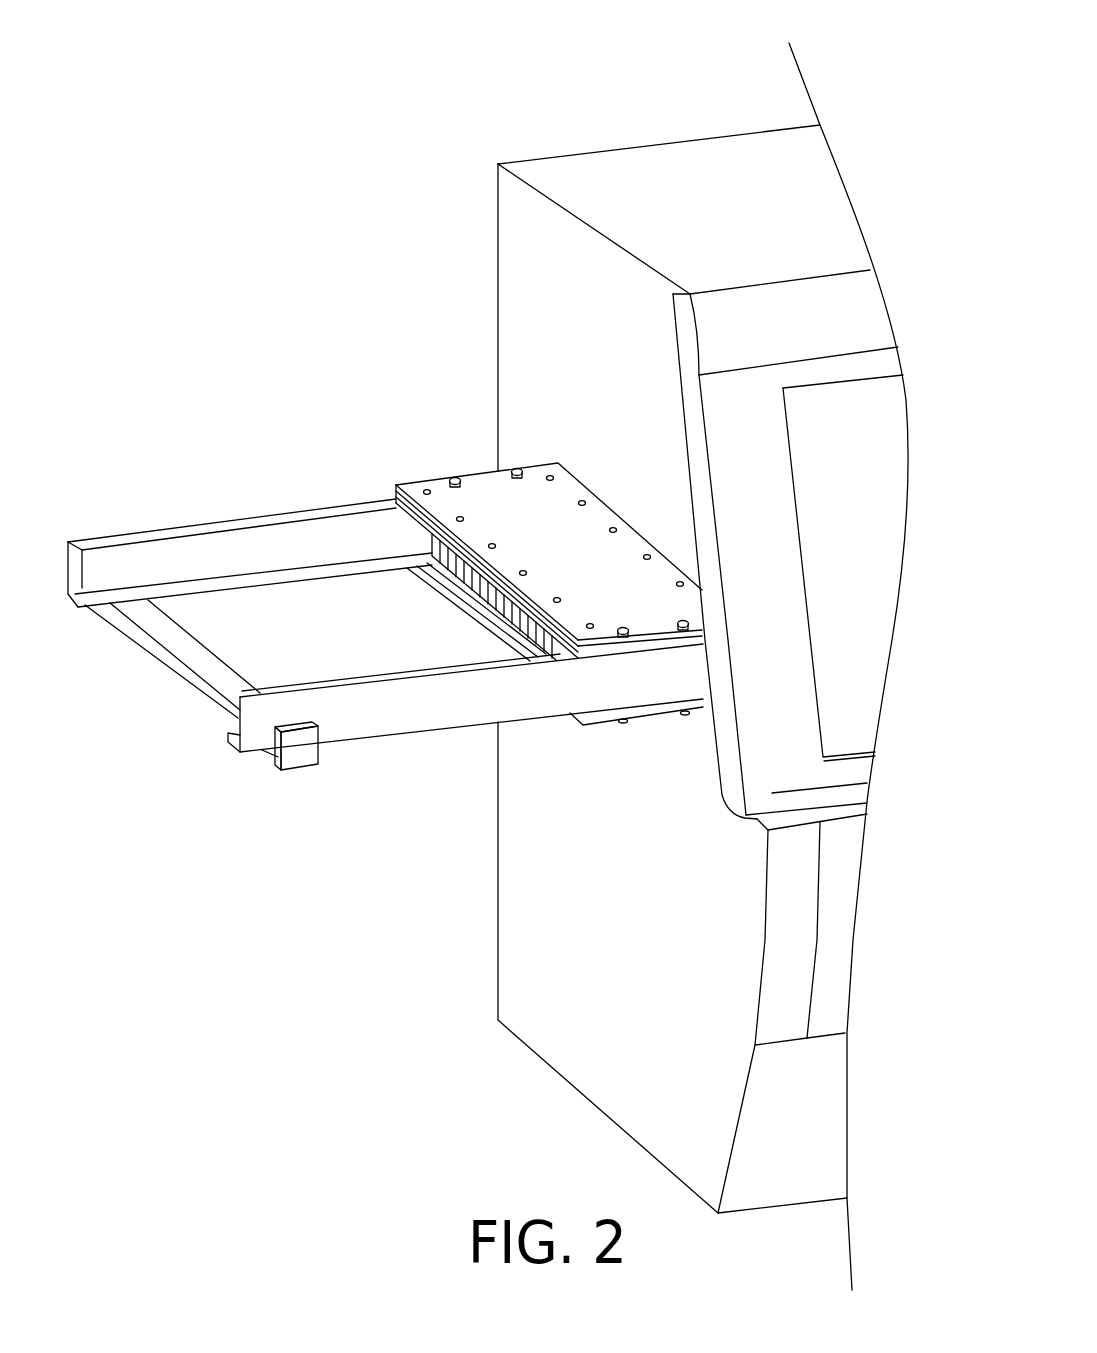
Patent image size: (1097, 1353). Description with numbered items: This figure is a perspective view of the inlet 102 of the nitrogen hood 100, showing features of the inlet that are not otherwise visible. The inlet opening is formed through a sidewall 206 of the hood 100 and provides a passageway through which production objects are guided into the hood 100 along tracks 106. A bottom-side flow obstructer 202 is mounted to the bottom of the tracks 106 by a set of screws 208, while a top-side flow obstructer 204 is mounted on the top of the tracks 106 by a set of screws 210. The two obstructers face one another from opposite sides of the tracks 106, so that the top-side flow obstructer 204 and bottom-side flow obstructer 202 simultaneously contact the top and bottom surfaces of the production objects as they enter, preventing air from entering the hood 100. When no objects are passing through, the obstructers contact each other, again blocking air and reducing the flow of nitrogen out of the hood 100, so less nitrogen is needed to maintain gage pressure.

The nitrogen hood 100 is at (457, 146).
The inlet 102 is at (292, 410).
The tracks 106 is at (238, 720).
The bottom-side flow obstructer 202 is at (446, 635).
The top-side flow obstructer 204 is at (395, 538).
The sidewall 206 is at (537, 352).
The screws 208 is at (695, 715).
The screws 210 is at (527, 470).